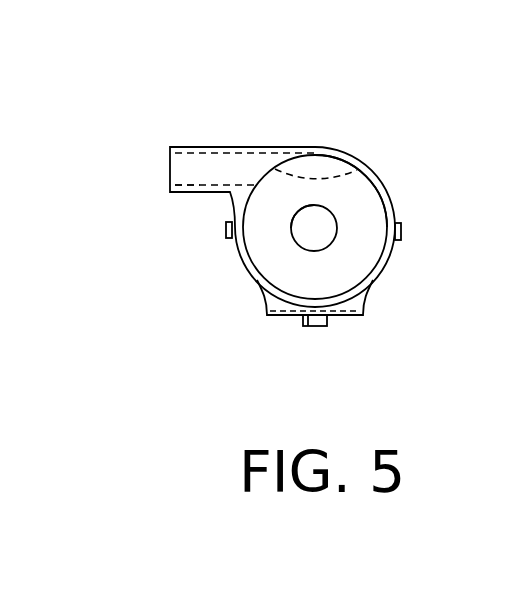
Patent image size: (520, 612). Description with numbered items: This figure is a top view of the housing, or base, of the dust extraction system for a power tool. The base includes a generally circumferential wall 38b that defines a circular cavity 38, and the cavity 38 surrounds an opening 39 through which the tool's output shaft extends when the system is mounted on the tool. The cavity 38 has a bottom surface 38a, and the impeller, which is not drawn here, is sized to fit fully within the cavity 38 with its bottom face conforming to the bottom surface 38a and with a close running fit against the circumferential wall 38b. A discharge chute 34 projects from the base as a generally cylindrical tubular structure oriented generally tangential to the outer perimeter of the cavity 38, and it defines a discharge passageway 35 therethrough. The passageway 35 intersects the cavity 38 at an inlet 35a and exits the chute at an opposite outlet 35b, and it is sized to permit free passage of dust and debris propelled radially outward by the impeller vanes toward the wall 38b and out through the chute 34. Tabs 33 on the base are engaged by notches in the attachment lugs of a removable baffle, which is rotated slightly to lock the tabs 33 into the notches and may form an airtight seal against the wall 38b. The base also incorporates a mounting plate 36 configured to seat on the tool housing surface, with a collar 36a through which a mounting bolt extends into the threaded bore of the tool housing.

The tabs 33 is at (226, 231).
The discharge chute 34 is at (255, 147).
The discharge passageway 35 is at (172, 160).
The inlet 35a is at (358, 170).
The outlet 35b is at (172, 173).
The mounting plate 36 is at (277, 316).
The collar 36a is at (321, 327).
The cavity 38 is at (350, 260).
The bottom surface 38a is at (293, 282).
The circumferential wall 38b is at (376, 201).
The opening 39 is at (292, 244).